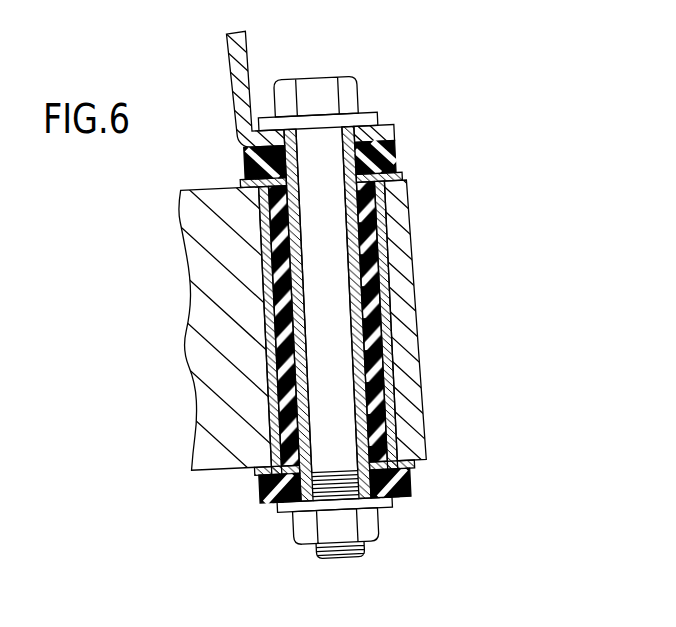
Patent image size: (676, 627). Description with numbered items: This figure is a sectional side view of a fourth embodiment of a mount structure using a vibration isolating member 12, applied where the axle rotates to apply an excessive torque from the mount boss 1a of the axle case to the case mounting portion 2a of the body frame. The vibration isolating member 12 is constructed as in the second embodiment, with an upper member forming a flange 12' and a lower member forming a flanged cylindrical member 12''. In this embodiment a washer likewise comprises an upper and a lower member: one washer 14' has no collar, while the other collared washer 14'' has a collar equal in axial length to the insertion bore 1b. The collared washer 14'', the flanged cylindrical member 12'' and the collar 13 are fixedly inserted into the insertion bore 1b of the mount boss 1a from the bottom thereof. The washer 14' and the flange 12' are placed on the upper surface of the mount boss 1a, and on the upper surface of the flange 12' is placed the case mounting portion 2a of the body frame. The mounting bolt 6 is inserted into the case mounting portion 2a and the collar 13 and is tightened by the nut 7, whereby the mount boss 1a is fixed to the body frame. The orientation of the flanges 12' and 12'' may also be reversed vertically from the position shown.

The mount boss 1a is at (415, 278).
The insertion bore 1b is at (413, 363).
The case mounting portion 2a is at (395, 134).
The mounting bolt 6 is at (352, 92).
The nut 7 is at (380, 525).
The vibration isolating member 12 is at (391, 341).
The flange 12' is at (374, 153).
The flanged cylindrical member 12'' is at (387, 490).
The collar 13 is at (352, 308).
The washer 14' is at (373, 192).
The collared washer 14'' is at (386, 453).